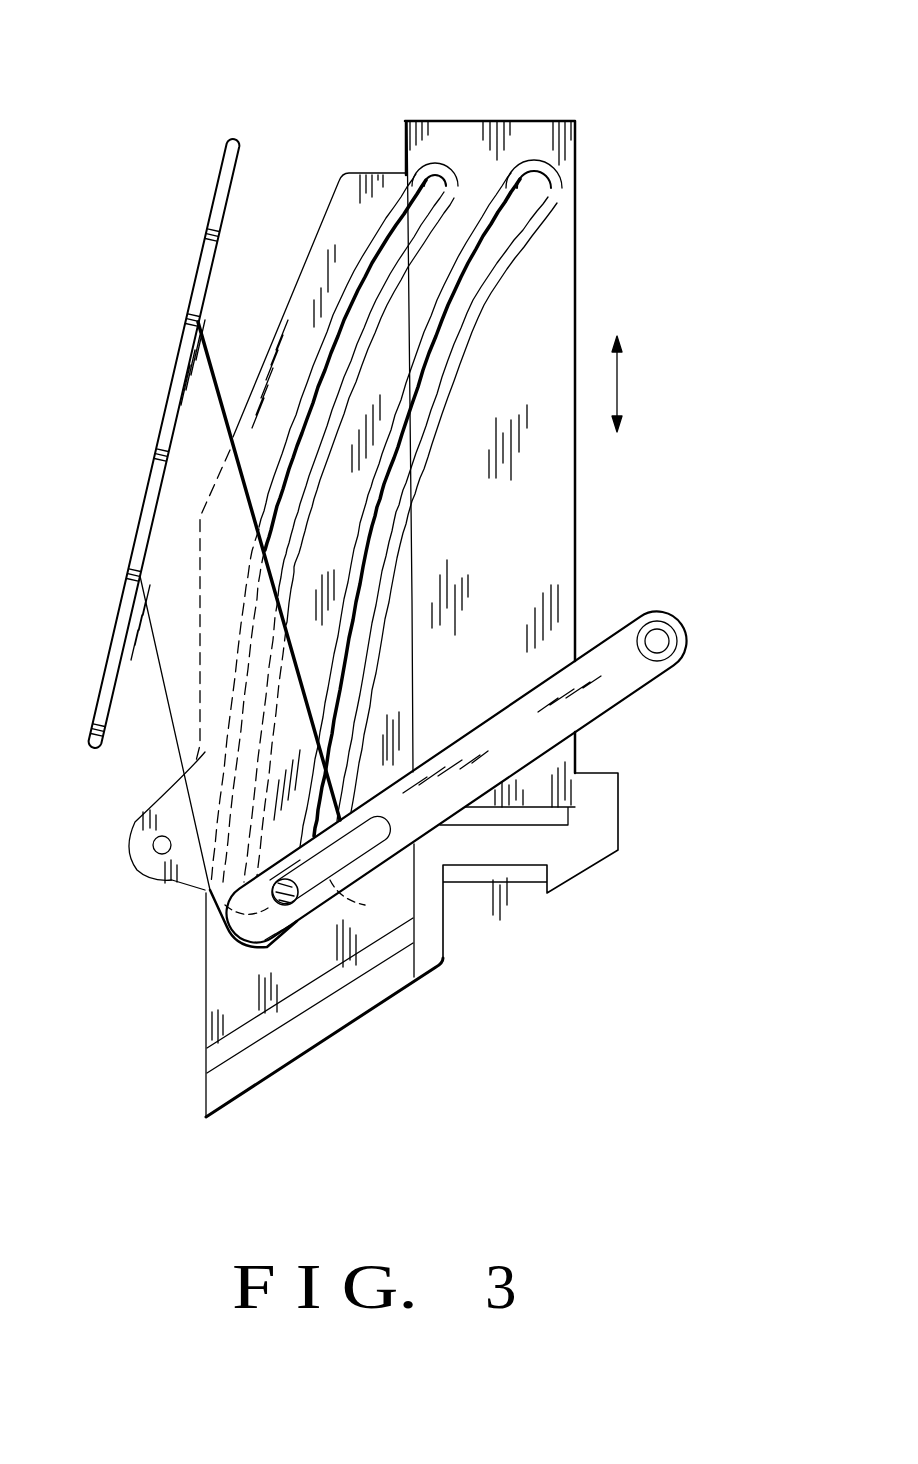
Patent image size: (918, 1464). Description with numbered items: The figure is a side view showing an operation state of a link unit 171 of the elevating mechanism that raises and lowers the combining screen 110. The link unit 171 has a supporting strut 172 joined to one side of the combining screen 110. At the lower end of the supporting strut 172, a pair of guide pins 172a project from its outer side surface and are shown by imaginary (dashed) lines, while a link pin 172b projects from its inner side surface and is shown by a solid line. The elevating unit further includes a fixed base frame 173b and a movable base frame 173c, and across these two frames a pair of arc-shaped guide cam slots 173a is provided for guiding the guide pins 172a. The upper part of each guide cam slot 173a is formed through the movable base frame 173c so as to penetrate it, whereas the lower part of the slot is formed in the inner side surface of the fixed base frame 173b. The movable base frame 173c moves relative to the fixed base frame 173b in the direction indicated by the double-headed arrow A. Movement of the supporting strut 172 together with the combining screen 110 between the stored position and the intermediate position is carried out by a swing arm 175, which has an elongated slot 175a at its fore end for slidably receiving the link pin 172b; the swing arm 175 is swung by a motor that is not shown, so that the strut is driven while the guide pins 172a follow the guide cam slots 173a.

The combining screen 110 is at (215, 197).
The link unit 171 is at (467, 108).
The supporting strut 172 is at (177, 697).
The guide pins 172a is at (215, 900).
The link pin 172b is at (290, 905).
The guide cam slots 173a is at (386, 241).
The fixed base frame 173b is at (240, 977).
The movable base frame 173c is at (537, 524).
The swing arm 175 is at (613, 677).
The elongated slot 175a is at (390, 857).